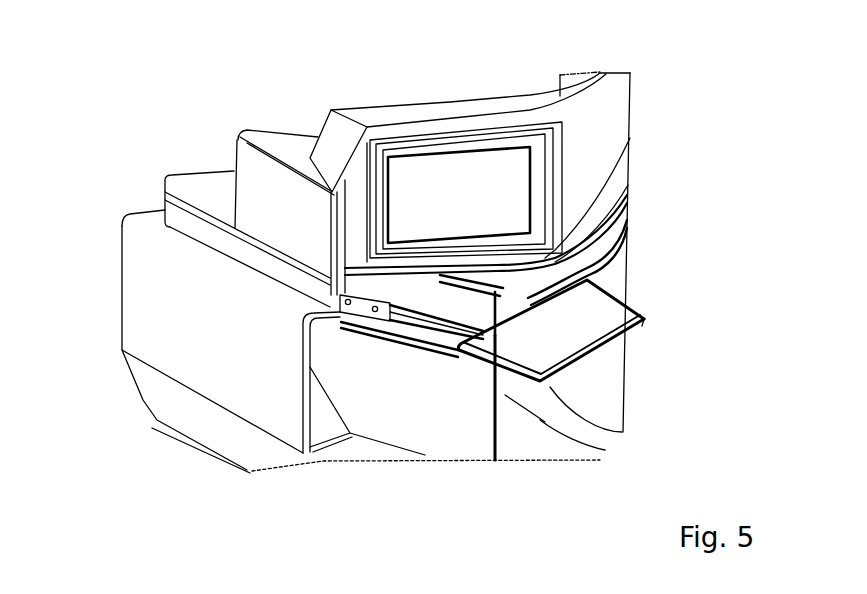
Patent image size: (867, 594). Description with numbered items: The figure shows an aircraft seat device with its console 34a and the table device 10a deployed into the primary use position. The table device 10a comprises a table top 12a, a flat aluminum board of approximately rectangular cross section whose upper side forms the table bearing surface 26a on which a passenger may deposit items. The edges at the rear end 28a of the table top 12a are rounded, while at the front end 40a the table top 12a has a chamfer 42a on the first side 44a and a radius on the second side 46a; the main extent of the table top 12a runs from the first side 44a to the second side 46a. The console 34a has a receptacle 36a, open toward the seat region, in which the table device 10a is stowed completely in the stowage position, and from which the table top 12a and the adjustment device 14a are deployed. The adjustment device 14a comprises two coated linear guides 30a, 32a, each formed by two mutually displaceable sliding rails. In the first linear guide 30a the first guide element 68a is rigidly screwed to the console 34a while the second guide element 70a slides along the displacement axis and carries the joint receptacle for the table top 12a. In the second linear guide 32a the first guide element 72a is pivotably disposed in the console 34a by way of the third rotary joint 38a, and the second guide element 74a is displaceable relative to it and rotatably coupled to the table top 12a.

The table device 10a is at (663, 282).
The table top 12a is at (543, 330).
The adjustment device 14a is at (495, 348).
The table bearing surface 26a is at (603, 363).
The rear end 28a is at (400, 458).
The first linear guide 30a is at (630, 138).
The second linear guide 32a is at (458, 299).
The console 34a is at (182, 258).
The receptacle 36a is at (622, 437).
The third rotary joint 38a is at (353, 325).
The front end 40a is at (636, 334).
The chamfer 42a is at (651, 310).
The first side 44a is at (520, 283).
The second side 46a is at (506, 331).
The first guide element 68a is at (502, 265).
The second guide element 70a is at (628, 185).
The first guide element 72a is at (376, 316).
The second guide element 74a is at (436, 346).